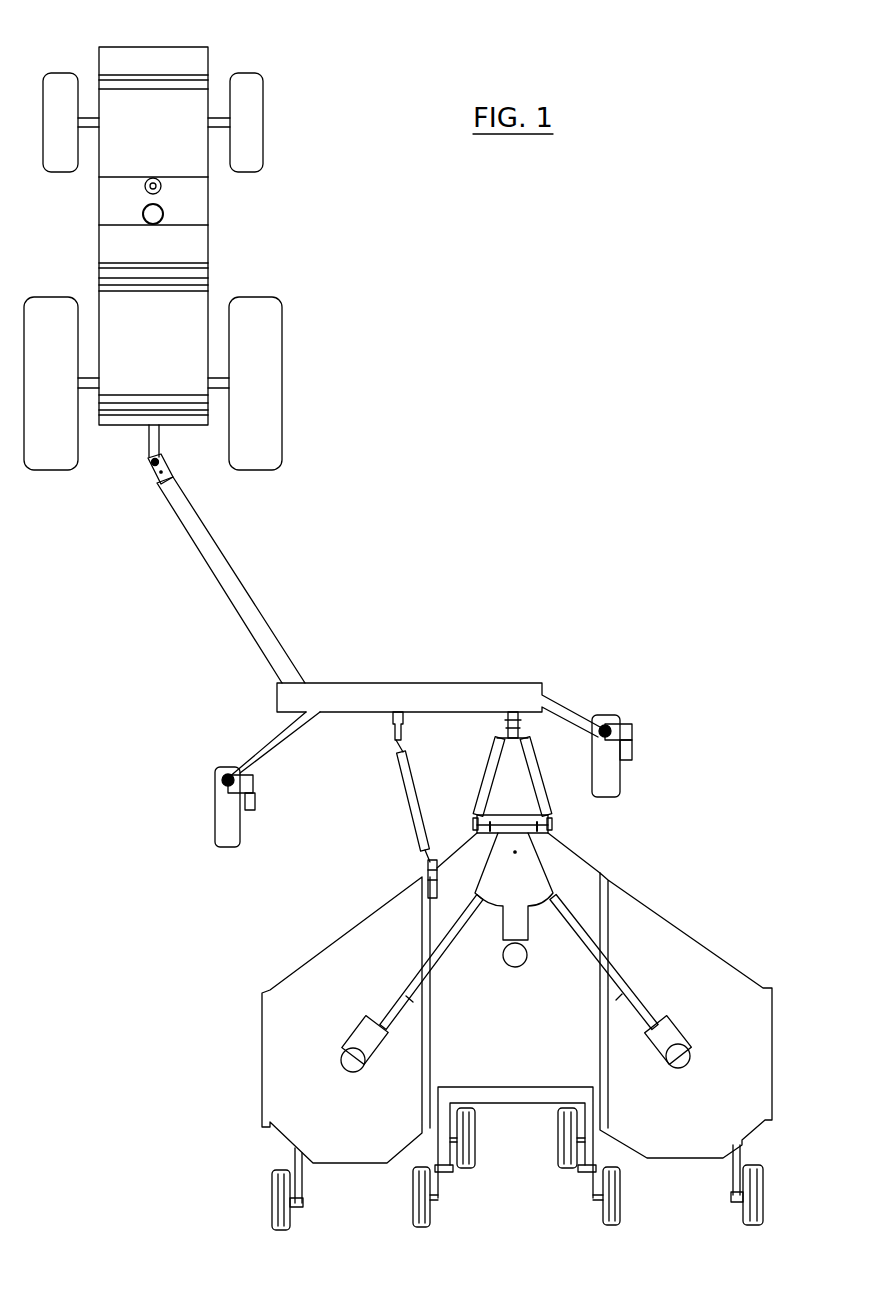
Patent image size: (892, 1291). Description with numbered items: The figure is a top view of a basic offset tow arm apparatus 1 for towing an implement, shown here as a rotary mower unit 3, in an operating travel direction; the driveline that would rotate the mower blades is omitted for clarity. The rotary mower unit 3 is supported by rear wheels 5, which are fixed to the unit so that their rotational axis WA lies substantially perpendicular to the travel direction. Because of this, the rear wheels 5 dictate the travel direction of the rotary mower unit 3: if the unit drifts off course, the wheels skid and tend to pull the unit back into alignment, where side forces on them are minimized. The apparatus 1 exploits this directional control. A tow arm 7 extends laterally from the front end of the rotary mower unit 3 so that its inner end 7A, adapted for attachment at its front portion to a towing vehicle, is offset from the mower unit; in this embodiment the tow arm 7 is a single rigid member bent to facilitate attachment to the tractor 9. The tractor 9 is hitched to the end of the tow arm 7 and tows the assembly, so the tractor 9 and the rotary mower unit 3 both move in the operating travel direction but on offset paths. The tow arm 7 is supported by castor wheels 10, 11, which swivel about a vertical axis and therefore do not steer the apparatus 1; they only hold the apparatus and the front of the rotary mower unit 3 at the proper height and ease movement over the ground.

The offset tow arm apparatus 1 is at (465, 612).
The rotary mower unit 3 is at (707, 947).
The rear wheels 5 is at (620, 1190).
The tow arm 7 is at (343, 683).
The inner end of the tow arm 7A is at (160, 497).
The tractor 9 is at (227, 260).
The castor wheel 10 is at (217, 813).
The castor wheel 11 is at (667, 1035).
The rotational axis of the rear wheels WA is at (765, 1195).